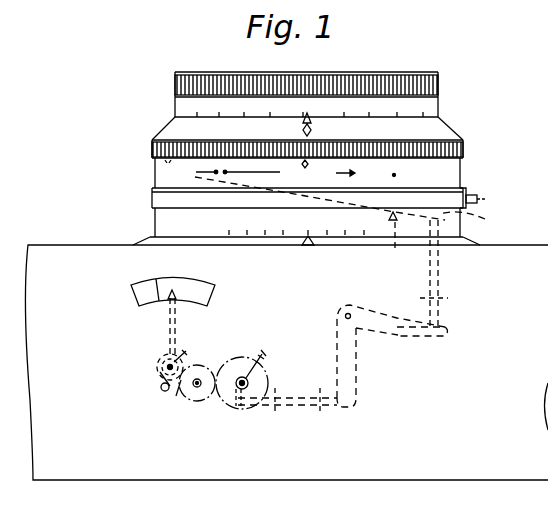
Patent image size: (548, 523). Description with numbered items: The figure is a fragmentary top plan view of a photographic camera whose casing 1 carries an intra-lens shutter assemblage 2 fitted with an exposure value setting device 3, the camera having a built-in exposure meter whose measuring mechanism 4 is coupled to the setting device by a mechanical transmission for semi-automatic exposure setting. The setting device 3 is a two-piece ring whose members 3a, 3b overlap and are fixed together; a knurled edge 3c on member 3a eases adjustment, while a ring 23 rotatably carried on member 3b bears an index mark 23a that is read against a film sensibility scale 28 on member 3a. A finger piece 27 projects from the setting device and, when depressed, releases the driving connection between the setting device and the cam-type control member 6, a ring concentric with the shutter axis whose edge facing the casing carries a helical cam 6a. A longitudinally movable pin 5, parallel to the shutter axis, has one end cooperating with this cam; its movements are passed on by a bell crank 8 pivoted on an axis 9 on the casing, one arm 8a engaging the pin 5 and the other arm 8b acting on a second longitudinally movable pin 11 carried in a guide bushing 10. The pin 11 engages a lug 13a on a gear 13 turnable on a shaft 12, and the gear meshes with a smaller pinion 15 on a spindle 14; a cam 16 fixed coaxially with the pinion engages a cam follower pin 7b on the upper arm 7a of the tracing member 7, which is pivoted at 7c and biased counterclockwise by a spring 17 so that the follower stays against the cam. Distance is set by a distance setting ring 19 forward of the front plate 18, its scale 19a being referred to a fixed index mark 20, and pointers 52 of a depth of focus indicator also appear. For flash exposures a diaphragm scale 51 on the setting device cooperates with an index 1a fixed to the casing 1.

The casing 1 is at (58, 254).
The index 1a is at (308, 246).
The intra-lens shutter assemblage 2 is at (106, 123).
The exposure value setting device 3 is at (138, 166).
The ring member 3a is at (152, 184).
The ring member 3b is at (152, 217).
The knurled edge 3c is at (152, 150).
The measuring mechanism 4 is at (122, 340).
The longitudinally movable pin 5 is at (442, 262).
The cam-type control member 6 is at (466, 224).
The helical cam 6a is at (395, 253).
The tracing member 7 is at (168, 334).
The upper arm 7a is at (155, 361).
The cam follower pin 7b is at (165, 392).
The pivot 7c is at (157, 368).
The bell crank 8 is at (356, 332).
The arm 8a is at (420, 333).
The arm 8b is at (357, 392).
The axis 9 is at (348, 313).
The guide bushing 10 is at (293, 411).
The second longitudinally movable pin 11 is at (322, 408).
The shaft 12 is at (248, 385).
The gear 13 is at (238, 357).
The lug 13a is at (239, 407).
The spindle 14 is at (199, 379).
The pinion 15 is at (207, 402).
The cam 16 is at (177, 404).
The spring 17 is at (159, 385).
The front plate 18 is at (176, 128).
The distance setting ring 19 is at (440, 108).
The scale 19a is at (440, 90).
The fixed index mark 20 is at (312, 121).
The ring 23 is at (150, 199).
The index mark 23a is at (467, 192).
The finger piece 27 is at (480, 207).
The film sensibility scale 28 is at (462, 178).
The diaphragm scale 51 is at (279, 236).
The pointers 52 is at (237, 113).